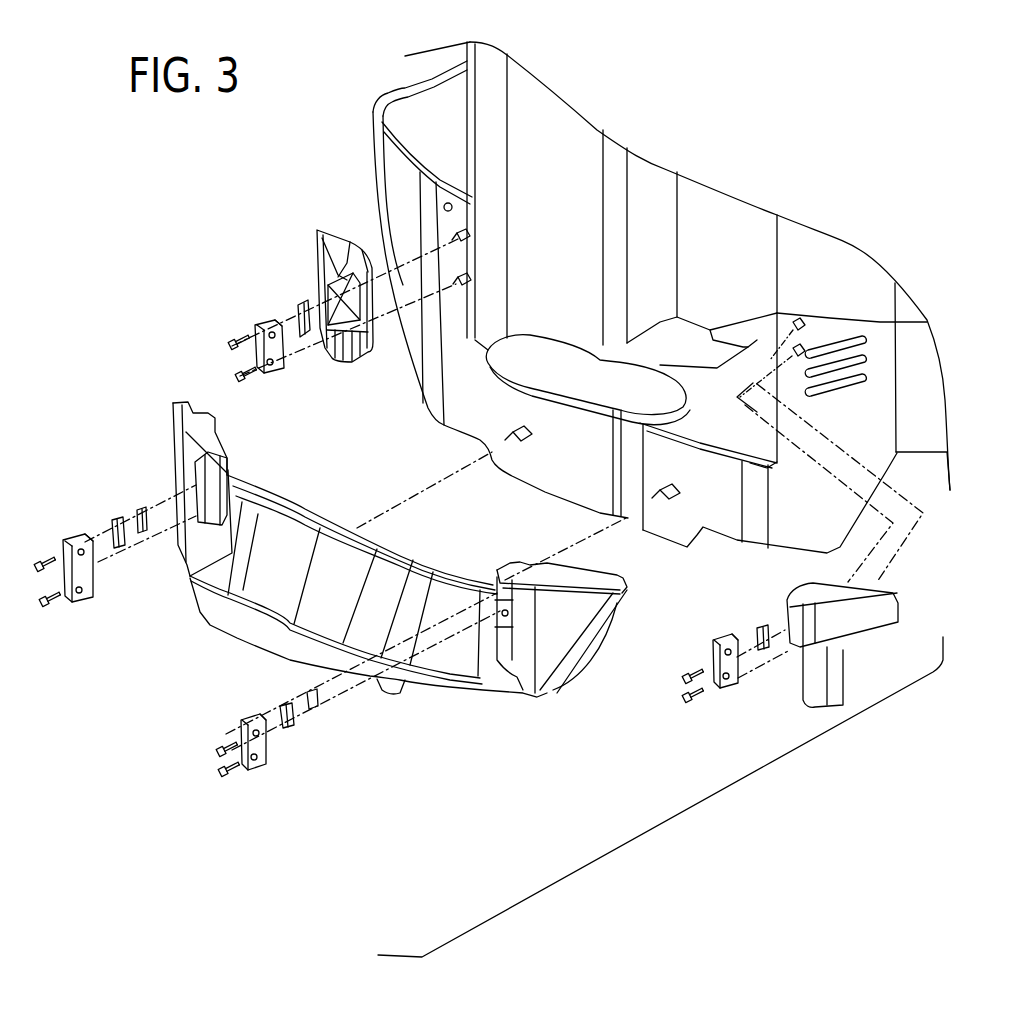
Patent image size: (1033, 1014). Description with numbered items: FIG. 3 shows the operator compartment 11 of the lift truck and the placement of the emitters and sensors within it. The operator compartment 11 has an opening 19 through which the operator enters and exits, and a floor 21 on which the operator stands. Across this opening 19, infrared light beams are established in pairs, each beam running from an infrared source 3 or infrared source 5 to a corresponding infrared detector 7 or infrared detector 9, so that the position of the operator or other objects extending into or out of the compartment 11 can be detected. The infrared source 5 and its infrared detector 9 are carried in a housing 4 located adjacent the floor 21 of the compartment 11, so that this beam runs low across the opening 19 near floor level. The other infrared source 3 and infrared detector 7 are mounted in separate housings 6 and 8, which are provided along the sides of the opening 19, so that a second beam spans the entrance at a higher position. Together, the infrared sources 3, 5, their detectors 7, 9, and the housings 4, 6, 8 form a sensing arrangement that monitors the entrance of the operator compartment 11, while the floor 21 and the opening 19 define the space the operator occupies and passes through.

The infrared source 3 is at (300, 306).
The housing 4 is at (587, 610).
The infrared source 5 is at (122, 530).
The housing 6 is at (867, 637).
The infrared detector 7 is at (765, 623).
The housing 8 is at (318, 230).
The infrared detector 9 is at (290, 727).
The operator compartment 11 is at (374, 111).
The opening 19 is at (574, 195).
The floor 21 is at (722, 402).